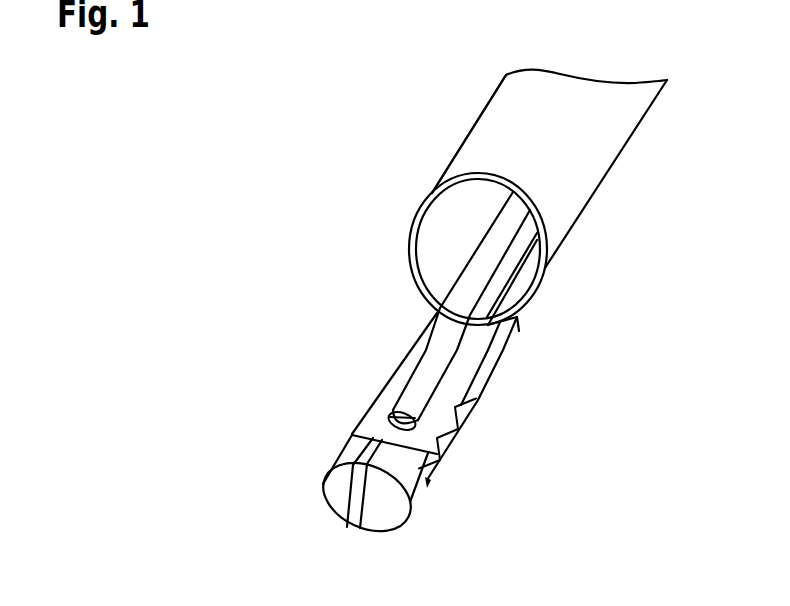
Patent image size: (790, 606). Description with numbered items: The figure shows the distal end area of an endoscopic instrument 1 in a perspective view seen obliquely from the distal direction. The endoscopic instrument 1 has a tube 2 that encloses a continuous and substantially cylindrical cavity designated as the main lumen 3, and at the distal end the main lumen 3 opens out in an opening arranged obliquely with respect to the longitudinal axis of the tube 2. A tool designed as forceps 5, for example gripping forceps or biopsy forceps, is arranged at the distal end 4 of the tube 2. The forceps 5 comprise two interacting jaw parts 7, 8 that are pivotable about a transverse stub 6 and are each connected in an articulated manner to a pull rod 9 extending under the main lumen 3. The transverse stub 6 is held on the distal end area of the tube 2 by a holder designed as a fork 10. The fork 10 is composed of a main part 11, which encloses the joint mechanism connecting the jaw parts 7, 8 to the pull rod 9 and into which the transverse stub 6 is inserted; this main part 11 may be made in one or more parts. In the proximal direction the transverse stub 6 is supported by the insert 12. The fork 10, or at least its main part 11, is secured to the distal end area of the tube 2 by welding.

The endoscopic instrument 1 is at (303, 132).
The tube 2 is at (596, 173).
The main lumen 3 is at (446, 232).
The distal end 4 is at (337, 242).
The forceps 5 is at (283, 425).
The transverse stub 6 is at (398, 410).
The jaw part 7 is at (342, 500).
The jaw part 8 is at (388, 508).
The pull rod 9 is at (495, 278).
The fork 10 is at (566, 375).
The main part 11 is at (492, 367).
The insert 12 is at (428, 372).